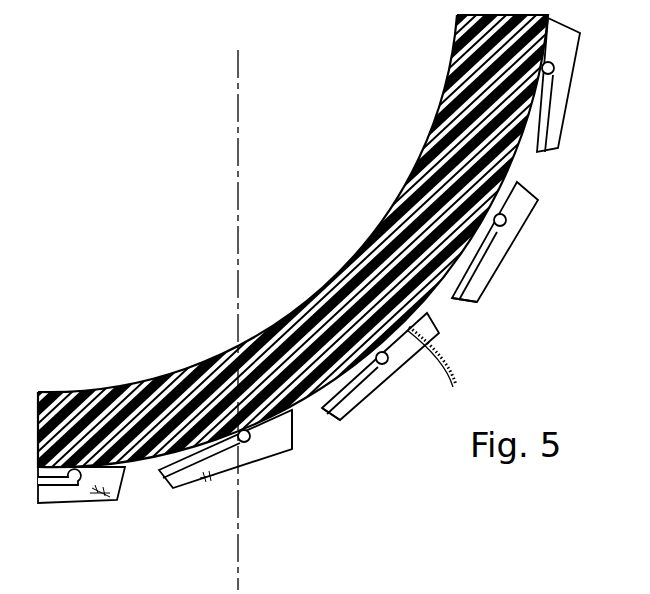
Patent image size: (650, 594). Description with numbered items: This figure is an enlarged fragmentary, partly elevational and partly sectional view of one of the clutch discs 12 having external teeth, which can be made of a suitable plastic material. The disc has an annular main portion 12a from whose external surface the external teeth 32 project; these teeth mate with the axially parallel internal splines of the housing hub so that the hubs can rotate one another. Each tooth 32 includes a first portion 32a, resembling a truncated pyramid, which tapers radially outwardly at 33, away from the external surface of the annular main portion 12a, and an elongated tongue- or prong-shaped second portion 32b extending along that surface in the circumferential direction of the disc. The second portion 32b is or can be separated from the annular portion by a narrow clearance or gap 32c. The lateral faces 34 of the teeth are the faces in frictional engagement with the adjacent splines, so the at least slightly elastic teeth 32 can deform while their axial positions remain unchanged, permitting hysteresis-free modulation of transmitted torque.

The clutch disc 12 is at (398, 129).
The annular main portion 12a is at (368, 262).
The external teeth 32 is at (209, 490).
The first portion 32a is at (513, 205).
The second portion 32b is at (497, 250).
The clearance 32c is at (463, 272).
The taper 33 is at (327, 412).
The lateral faces 34 is at (405, 335).